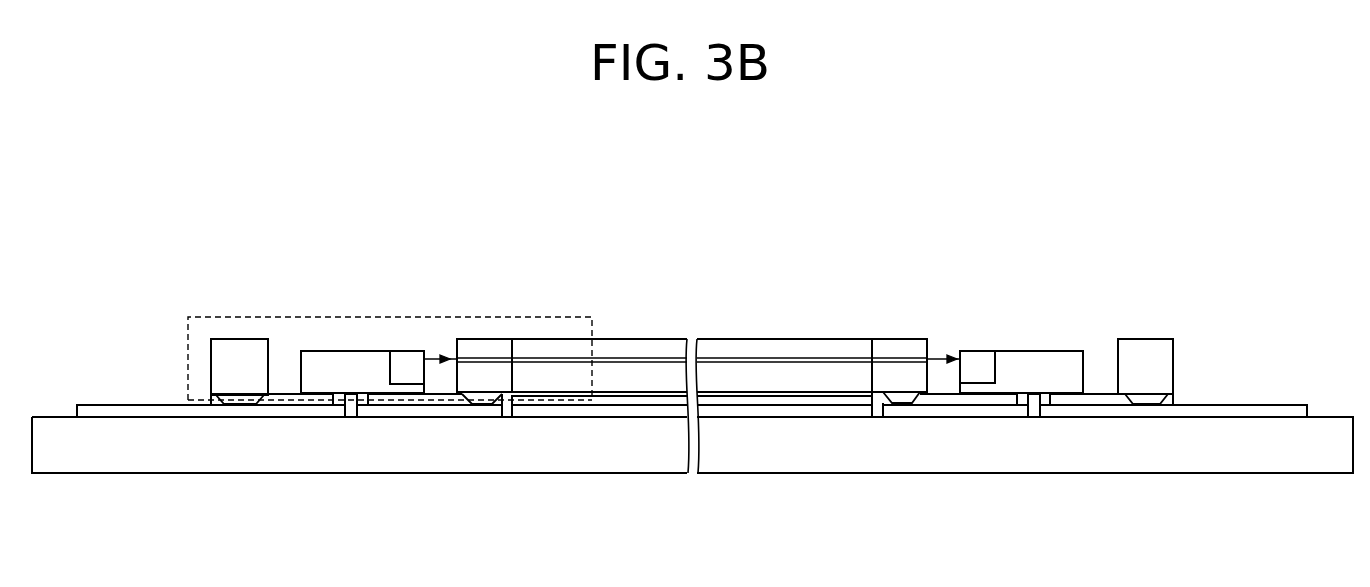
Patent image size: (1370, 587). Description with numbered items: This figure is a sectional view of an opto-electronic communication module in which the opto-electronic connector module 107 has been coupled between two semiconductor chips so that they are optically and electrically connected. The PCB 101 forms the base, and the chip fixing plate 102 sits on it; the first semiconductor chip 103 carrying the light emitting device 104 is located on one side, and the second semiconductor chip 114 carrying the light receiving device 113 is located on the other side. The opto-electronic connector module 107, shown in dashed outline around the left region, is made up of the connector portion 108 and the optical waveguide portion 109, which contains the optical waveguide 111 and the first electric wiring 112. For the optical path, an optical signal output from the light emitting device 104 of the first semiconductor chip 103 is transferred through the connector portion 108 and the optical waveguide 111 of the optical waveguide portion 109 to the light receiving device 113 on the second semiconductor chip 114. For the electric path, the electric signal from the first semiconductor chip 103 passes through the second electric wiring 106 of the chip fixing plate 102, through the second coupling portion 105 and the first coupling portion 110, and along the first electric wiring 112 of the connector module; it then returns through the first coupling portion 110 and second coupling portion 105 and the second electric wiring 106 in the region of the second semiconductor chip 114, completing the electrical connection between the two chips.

The PCB 101 is at (540, 455).
The chip fixing plate 102 is at (277, 406).
The first semiconductor chip 103 is at (315, 386).
The light emitting device 104 is at (405, 378).
The second coupling portion 105 is at (217, 396).
The second electric wiring 106 is at (153, 406).
The opto-electronic connector module 107 is at (392, 316).
The connector portion 108 is at (487, 347).
The optical waveguide portion 109 is at (676, 350).
The first coupling portion 110 is at (487, 401).
The optical waveguide 111 is at (556, 360).
The first electric wiring 112 is at (629, 390).
The light receiving device 113 is at (977, 378).
The second semiconductor chip 114 is at (1036, 350).